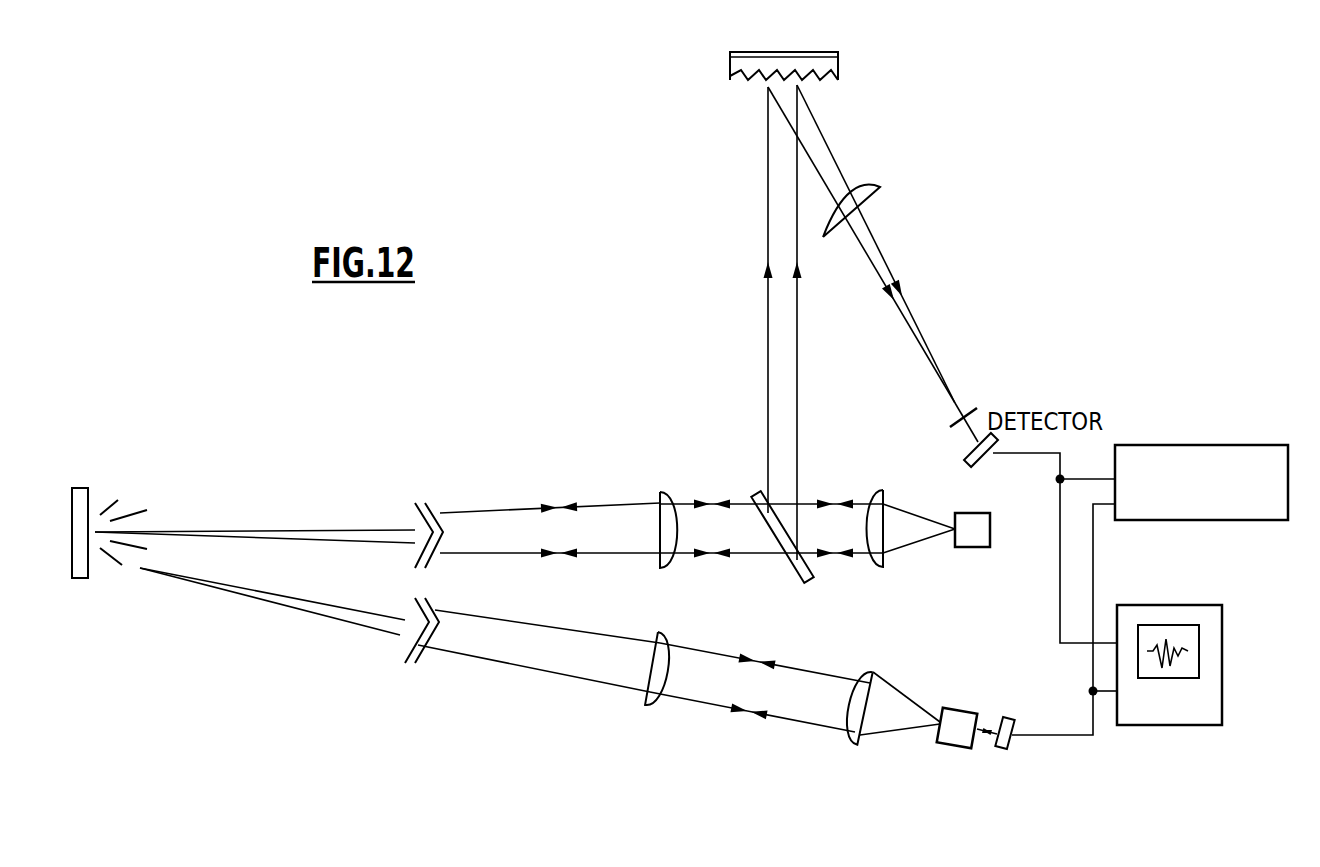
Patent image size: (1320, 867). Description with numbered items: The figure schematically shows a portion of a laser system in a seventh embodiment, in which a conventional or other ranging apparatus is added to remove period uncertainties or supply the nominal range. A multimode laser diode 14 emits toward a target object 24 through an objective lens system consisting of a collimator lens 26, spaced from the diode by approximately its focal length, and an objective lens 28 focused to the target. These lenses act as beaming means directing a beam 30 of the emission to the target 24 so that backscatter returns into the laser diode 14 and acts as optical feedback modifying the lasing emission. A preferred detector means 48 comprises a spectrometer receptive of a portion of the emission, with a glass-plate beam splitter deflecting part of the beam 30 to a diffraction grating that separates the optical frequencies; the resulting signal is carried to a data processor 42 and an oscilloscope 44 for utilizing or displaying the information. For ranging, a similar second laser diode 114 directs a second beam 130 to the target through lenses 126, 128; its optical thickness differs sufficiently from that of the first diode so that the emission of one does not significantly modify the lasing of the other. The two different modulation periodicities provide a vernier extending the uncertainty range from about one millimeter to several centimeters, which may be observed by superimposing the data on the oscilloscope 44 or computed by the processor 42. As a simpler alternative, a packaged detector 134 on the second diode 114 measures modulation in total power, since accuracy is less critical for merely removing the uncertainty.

The laser diode 14 is at (968, 513).
The target object 24 is at (88, 498).
The collimator lens 26 is at (878, 493).
The objective lens 28 is at (662, 493).
The beam 30 is at (518, 512).
The data processor 42 is at (1178, 445).
The oscilloscope 44 is at (1157, 727).
The detector means 48 is at (848, 102).
The second laser diode 114 is at (950, 708).
The lens 126 is at (872, 675).
The lens 128 is at (658, 632).
The second beam 130 is at (515, 620).
The packaged detector 134 is at (1007, 718).